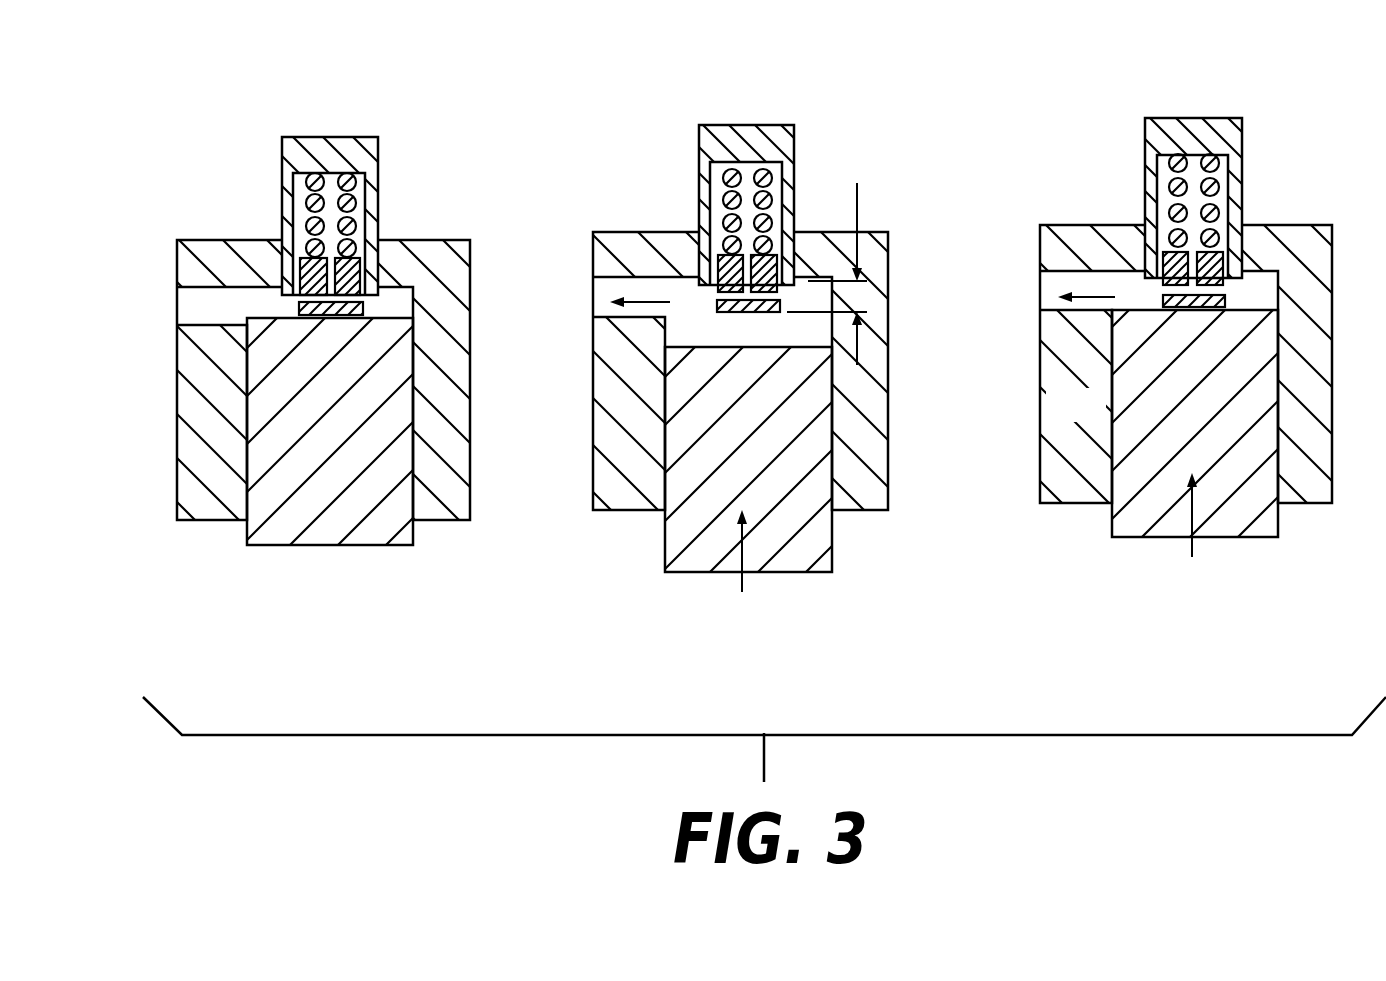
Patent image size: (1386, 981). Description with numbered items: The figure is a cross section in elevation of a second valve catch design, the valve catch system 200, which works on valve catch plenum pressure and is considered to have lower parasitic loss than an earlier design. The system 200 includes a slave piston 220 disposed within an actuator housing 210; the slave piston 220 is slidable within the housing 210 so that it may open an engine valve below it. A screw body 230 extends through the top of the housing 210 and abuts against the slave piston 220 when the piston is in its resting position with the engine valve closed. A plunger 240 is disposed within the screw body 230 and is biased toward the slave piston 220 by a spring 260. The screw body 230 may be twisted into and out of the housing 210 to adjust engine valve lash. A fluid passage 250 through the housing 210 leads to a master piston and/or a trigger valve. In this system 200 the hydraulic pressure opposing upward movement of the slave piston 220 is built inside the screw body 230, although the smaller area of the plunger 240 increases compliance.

The valve catch system 200 is at (720, 402).
The actuator housing 210 is at (213, 425).
The slave piston 220 is at (415, 520).
The screw body 230 is at (343, 148).
The plunger 240 is at (303, 267).
The fluid passage 250 is at (197, 313).
The spring 260 is at (358, 255).